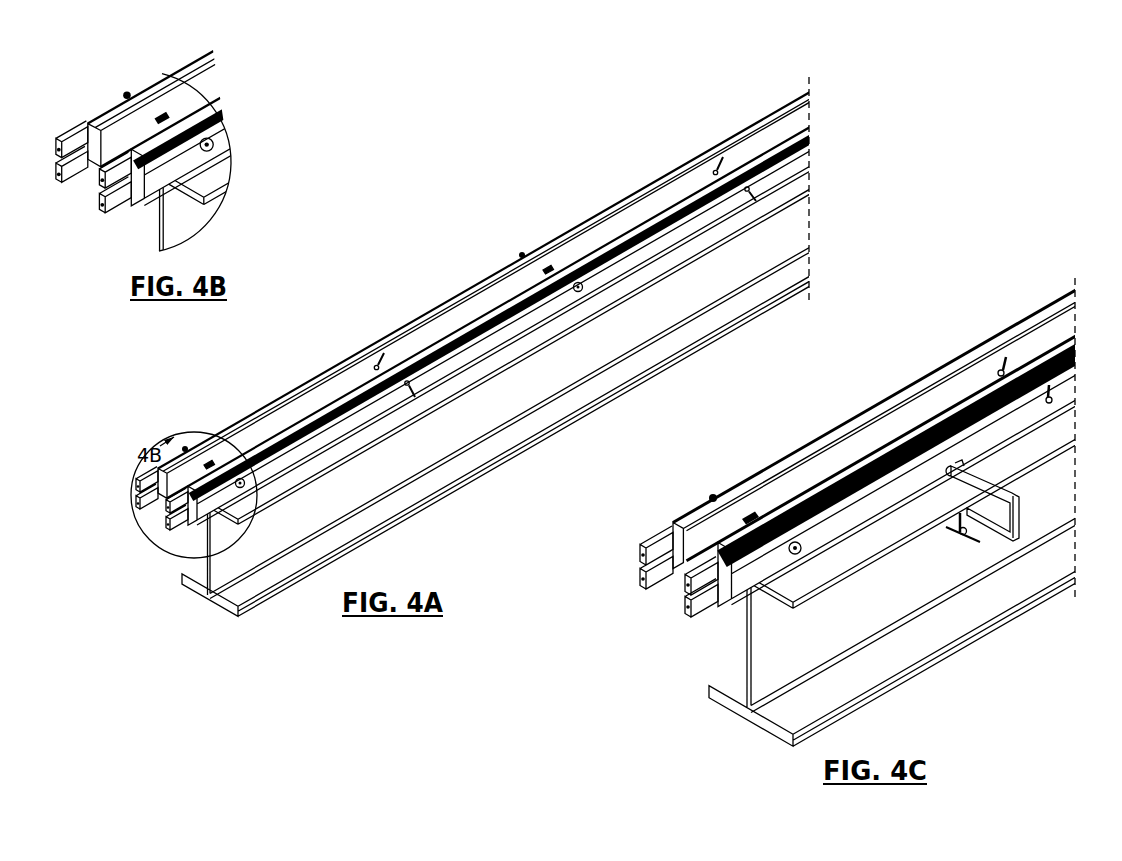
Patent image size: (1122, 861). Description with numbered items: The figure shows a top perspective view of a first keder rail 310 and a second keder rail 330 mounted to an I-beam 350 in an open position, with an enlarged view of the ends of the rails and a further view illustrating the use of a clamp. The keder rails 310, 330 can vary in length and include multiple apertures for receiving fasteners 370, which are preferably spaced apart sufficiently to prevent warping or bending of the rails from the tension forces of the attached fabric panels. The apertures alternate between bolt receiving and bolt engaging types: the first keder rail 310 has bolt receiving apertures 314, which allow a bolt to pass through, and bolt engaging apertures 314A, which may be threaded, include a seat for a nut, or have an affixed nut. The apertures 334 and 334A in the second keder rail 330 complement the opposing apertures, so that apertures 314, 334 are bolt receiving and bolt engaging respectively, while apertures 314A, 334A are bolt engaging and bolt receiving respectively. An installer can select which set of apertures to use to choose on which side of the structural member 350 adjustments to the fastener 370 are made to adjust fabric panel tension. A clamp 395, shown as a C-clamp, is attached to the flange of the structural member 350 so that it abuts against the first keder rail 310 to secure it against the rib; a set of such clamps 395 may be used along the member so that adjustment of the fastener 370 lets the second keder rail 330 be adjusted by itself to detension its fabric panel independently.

In FIG. 4A, the first keder rail 310 is at (330, 413).
In FIG. 4B, the first keder rail 310 is at (218, 98).
In FIG. 4C, the first keder rail 310 is at (742, 583).
In FIG. 4A, the second keder rail 330 is at (262, 405).
In FIG. 4B, the second keder rail 330 is at (170, 72).
In FIG. 4C, the second keder rail 330 is at (681, 516).
In FIG. 4A, the bolt receiving apertures 314 is at (582, 292).
In FIG. 4B, the bolt receiving apertures 314 is at (216, 133).
In FIG. 4C, the bolt receiving apertures 314 is at (803, 556).
In FIG. 4A, the bolt engaging apertures 314A is at (411, 391).
In FIG. 4C, the bolt engaging apertures 314A is at (1048, 386).
In FIG. 4A, the apertures 334 is at (550, 262).
In FIG. 4B, the apertures 334 is at (165, 107).
In FIG. 4C, the apertures 334 is at (754, 511).
In FIG. 4A, the apertures 334A is at (378, 364).
In FIG. 4C, the apertures 334A is at (1003, 364).
In FIG. 4A, the I-beam 350 is at (190, 608).
In FIG. 4B, the I-beam 350 is at (155, 240).
In FIG. 4C, the I-beam 350 is at (732, 735).
In FIG. 4A, the fasteners 370 is at (184, 447).
In FIG. 4B, the fasteners 370 is at (125, 95).
In FIG. 4C, the fasteners 370 is at (712, 495).
In FIG. 4C, the clamp 395 is at (1021, 543).